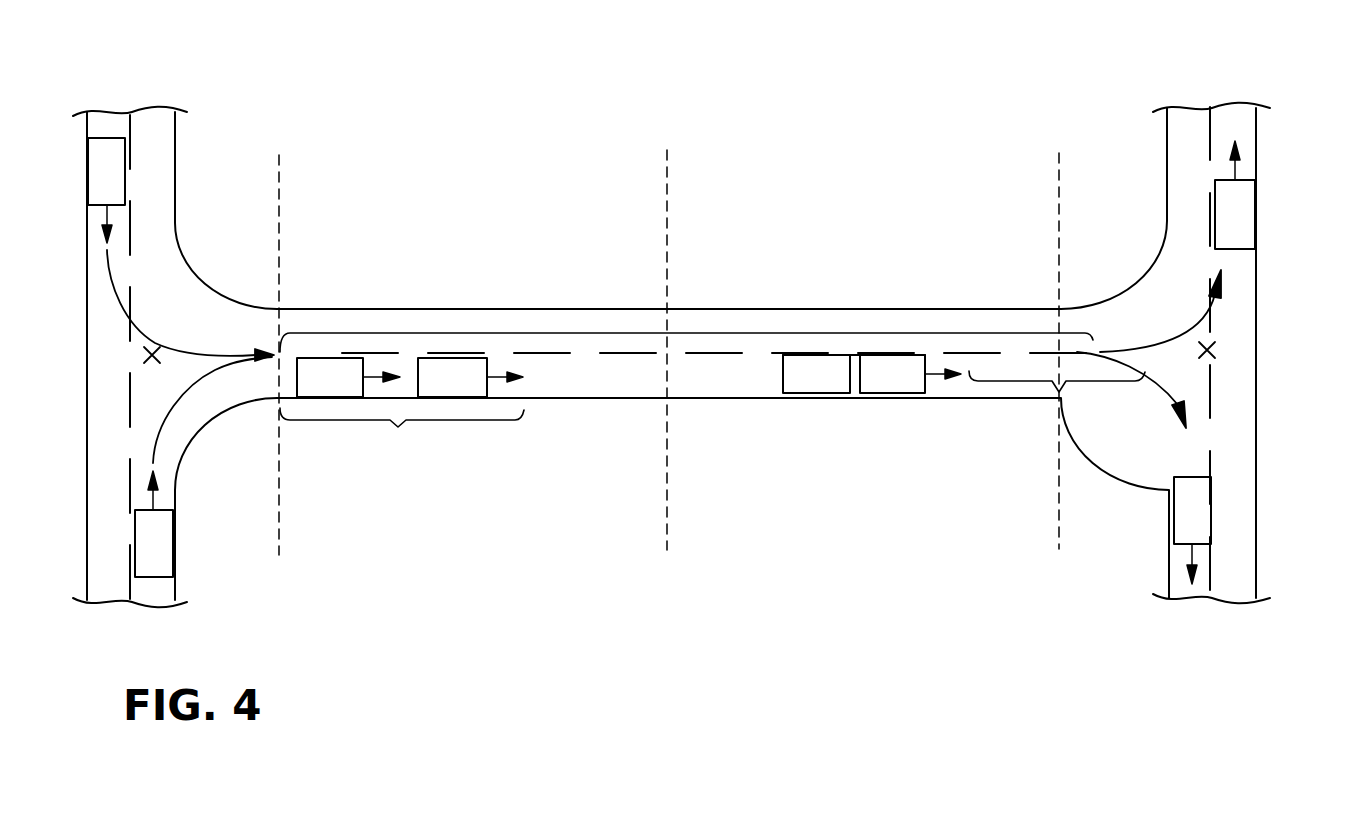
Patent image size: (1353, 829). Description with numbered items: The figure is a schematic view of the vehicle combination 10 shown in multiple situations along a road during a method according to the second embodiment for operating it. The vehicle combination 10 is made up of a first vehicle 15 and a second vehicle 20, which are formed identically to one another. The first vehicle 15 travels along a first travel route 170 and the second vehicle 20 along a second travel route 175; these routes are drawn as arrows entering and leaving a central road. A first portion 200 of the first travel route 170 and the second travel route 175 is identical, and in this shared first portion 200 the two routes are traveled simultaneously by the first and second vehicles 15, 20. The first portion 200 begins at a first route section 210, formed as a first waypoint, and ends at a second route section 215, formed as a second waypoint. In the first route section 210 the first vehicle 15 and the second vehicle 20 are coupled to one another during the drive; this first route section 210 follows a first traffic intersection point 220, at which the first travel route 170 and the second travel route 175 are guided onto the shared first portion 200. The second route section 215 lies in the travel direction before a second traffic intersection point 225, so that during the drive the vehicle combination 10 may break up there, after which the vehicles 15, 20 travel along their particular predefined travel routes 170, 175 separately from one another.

The vehicle combination 10 is at (851, 348).
The first vehicle 15 is at (113, 178).
The second vehicle 20 is at (162, 540).
The first travel route 170 is at (113, 287).
The second travel route 175 is at (180, 395).
The first portion 200 is at (667, 333).
The first route section 210 is at (402, 436).
The second route section 215 is at (1058, 396).
The first traffic intersection point 220 is at (153, 347).
The second traffic intersection point 225 is at (1217, 352).